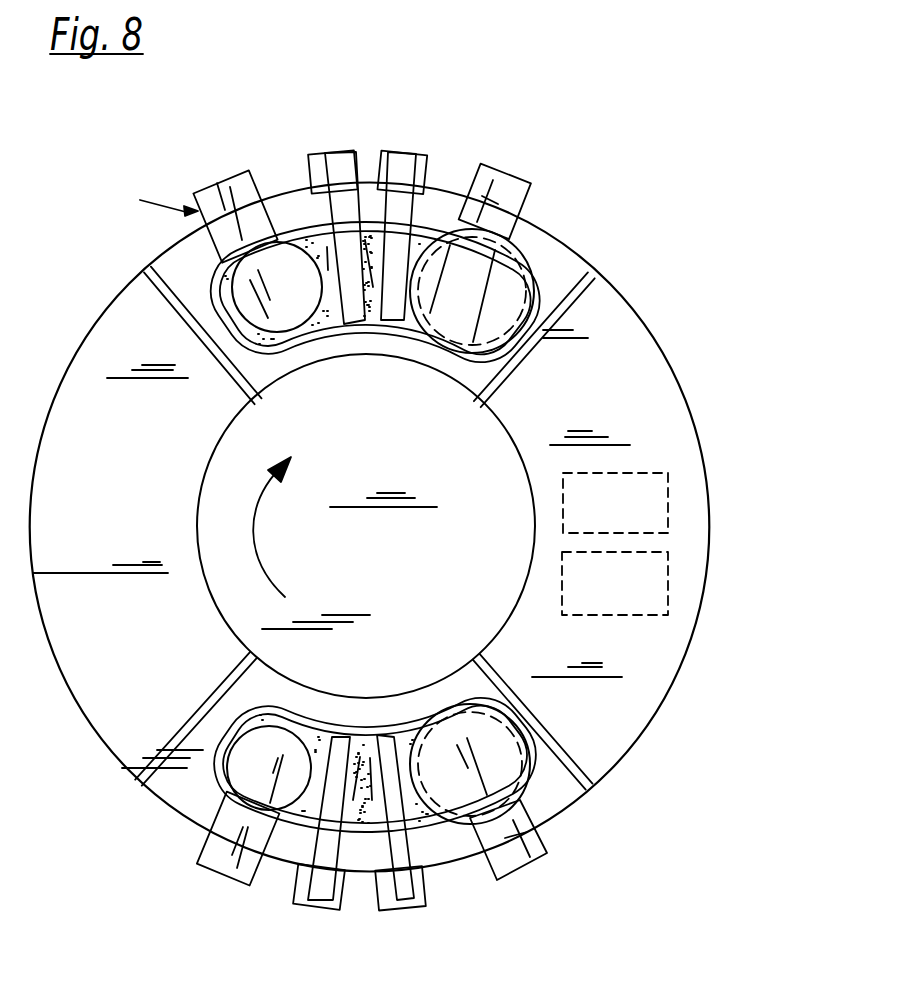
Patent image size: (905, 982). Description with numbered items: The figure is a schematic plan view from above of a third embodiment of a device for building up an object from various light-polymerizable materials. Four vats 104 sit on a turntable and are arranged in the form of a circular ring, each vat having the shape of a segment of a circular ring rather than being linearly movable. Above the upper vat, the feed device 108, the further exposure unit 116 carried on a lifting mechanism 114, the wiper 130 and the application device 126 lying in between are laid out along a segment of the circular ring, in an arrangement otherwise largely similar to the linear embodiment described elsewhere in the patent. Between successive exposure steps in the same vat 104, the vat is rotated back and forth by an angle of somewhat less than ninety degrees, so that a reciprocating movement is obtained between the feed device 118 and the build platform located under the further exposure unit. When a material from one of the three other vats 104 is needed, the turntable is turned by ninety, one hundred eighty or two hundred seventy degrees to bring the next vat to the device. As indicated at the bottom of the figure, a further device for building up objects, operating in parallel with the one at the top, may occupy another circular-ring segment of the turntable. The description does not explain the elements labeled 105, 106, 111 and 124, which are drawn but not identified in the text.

The vat 104 is at (615, 350).
The pocket 105 is at (297, 228).
The outer tab 106 is at (445, 205).
The feed device 108 is at (514, 252).
The sensor unit 111 is at (645, 582).
The lifting mechanism 114 is at (141, 198).
The further exposure unit 116 is at (195, 210).
The feed device 118 is at (233, 183).
The control unit 124 is at (645, 497).
The application device 126 is at (405, 178).
The wiper 130 is at (332, 178).